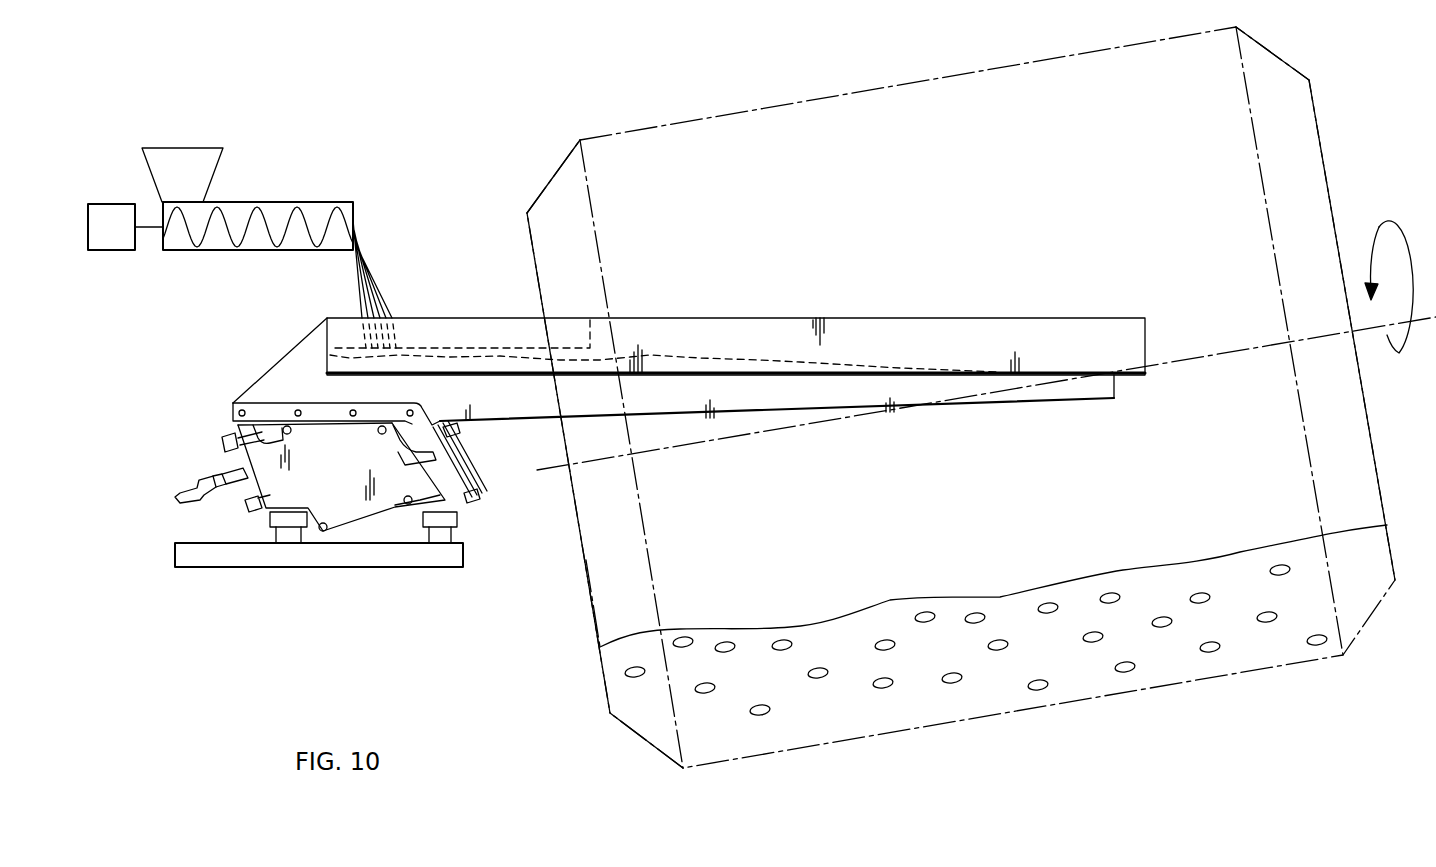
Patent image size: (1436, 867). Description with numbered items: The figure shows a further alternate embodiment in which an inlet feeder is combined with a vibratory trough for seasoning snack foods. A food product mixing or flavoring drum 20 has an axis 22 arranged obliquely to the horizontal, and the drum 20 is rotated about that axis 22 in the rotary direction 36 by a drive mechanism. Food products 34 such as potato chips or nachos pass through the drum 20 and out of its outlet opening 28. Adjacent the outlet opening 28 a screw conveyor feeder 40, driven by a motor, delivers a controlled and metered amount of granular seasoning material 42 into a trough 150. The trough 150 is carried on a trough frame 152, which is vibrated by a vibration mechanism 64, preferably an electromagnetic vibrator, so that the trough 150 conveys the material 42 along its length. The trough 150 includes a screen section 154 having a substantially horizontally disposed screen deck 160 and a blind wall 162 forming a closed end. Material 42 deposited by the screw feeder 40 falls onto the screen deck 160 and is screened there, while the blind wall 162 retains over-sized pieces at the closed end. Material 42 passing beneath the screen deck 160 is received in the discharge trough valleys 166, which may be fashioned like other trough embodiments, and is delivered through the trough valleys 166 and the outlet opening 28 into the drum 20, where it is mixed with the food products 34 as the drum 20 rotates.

The flavoring drum 20 is at (1018, 62).
The axis 22 is at (1176, 360).
The outlet opening 28 is at (586, 582).
The food products 34 is at (982, 680).
The rotary direction 36 is at (1393, 237).
The screw conveyor feeder 40 is at (290, 200).
The material 42 is at (363, 242).
The vibration mechanism 64 is at (339, 489).
The trough 150 is at (720, 320).
The trough frame 152 is at (507, 412).
The screen section 154 is at (404, 337).
The screen deck 160 is at (455, 348).
The blind wall 162 is at (585, 322).
The discharge trough valleys 166 is at (757, 368).